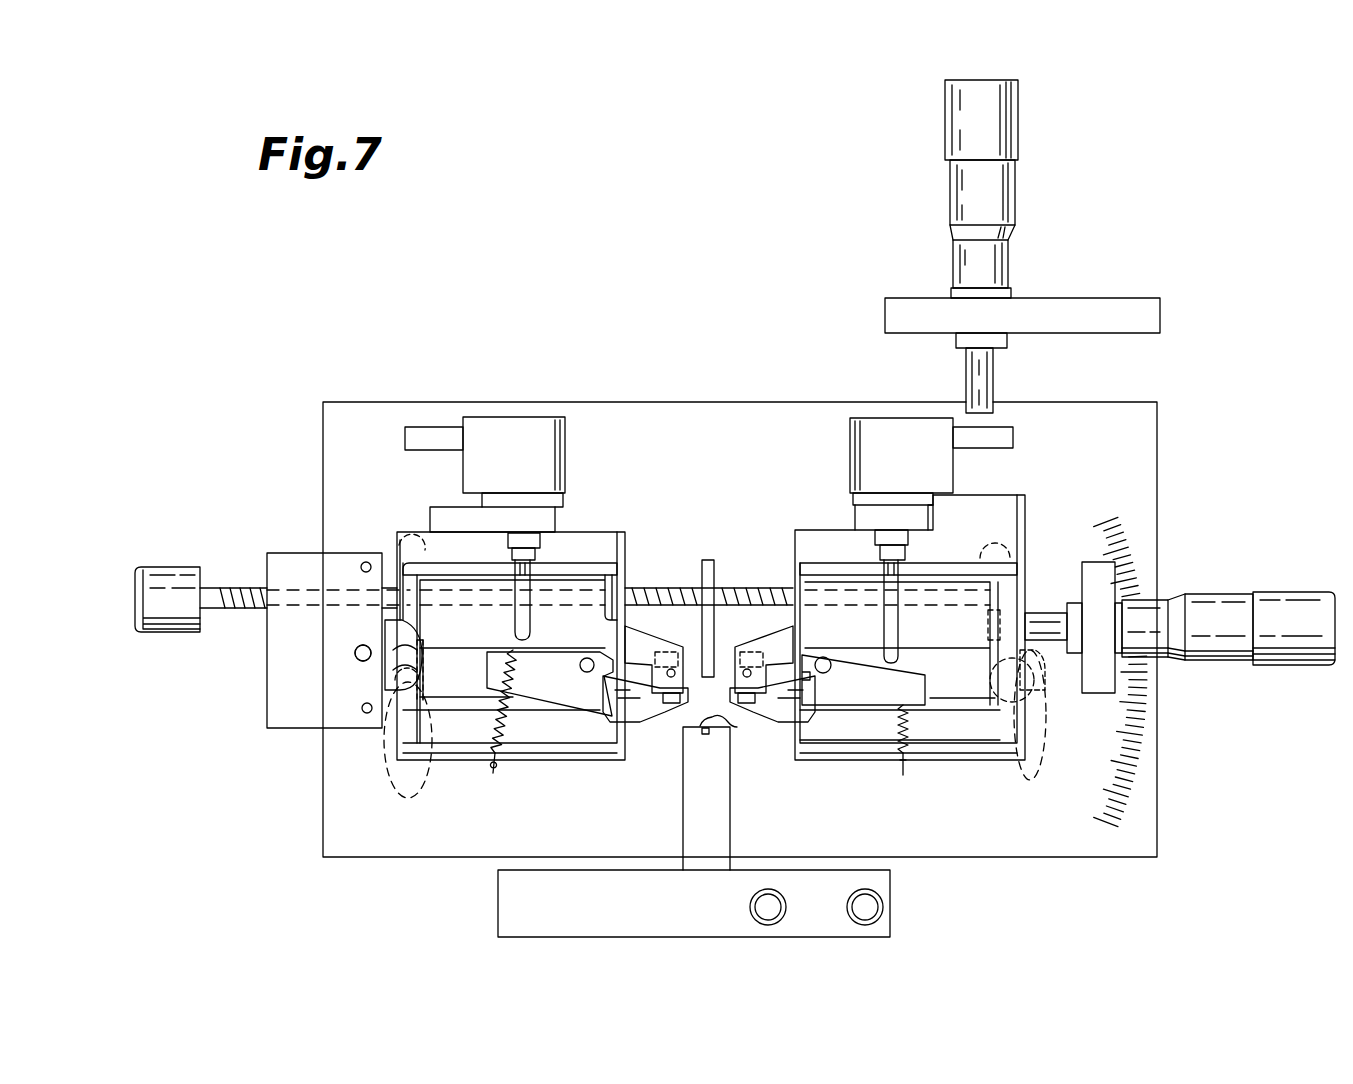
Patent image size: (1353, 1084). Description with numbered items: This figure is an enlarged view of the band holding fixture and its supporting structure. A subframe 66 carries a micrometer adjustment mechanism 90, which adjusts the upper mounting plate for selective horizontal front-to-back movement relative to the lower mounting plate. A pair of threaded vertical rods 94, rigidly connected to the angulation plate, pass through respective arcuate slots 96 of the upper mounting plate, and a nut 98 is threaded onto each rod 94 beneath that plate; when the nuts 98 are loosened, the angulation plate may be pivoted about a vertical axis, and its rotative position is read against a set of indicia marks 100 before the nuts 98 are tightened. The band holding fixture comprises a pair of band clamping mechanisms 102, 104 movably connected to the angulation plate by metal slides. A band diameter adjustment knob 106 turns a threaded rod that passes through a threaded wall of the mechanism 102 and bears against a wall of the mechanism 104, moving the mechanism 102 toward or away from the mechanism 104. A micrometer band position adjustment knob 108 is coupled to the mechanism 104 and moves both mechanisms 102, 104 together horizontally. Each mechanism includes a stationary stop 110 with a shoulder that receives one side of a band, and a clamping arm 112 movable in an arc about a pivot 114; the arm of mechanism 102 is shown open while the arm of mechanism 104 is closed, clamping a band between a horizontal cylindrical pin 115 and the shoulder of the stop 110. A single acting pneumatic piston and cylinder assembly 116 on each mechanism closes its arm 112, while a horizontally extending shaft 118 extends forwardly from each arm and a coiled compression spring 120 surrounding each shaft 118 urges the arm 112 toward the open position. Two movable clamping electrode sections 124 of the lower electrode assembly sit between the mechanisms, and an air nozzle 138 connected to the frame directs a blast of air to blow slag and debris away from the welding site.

The subframe 66 is at (1093, 300).
The micrometer adjustment mechanism 90 is at (1018, 113).
The threaded vertical rod 94 is at (377, 715).
The arcuate slot 96 is at (408, 795).
The nut 98 is at (368, 687).
The indicia marks 100 is at (1157, 730).
The band clamping mechanism 102 is at (558, 758).
The band clamping mechanism 104 is at (957, 760).
The band diameter adjustment knob 106 is at (178, 568).
The micrometer band position adjustment knob 108 is at (1290, 602).
The stationary stop 110 is at (640, 638).
The clamping arm 112 is at (635, 720).
The pivot 114 is at (580, 666).
The horizontal cylindrical pin 115 is at (722, 693).
The single acting pneumatic piston and cylinder assembly 116 is at (563, 462).
The horizontally extending shaft 118 is at (495, 765).
The coiled compression spring 120 is at (512, 722).
The clamping electrode section 124 is at (733, 650).
The air nozzle 138 is at (733, 723).